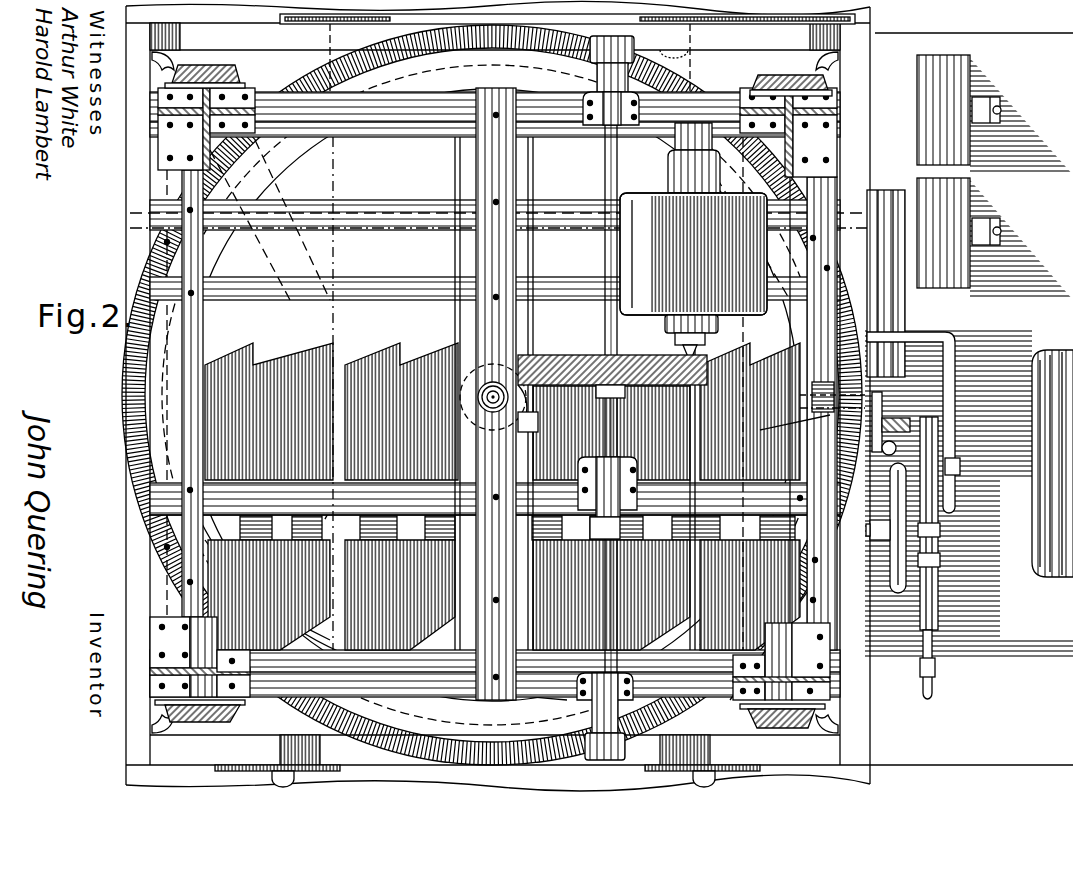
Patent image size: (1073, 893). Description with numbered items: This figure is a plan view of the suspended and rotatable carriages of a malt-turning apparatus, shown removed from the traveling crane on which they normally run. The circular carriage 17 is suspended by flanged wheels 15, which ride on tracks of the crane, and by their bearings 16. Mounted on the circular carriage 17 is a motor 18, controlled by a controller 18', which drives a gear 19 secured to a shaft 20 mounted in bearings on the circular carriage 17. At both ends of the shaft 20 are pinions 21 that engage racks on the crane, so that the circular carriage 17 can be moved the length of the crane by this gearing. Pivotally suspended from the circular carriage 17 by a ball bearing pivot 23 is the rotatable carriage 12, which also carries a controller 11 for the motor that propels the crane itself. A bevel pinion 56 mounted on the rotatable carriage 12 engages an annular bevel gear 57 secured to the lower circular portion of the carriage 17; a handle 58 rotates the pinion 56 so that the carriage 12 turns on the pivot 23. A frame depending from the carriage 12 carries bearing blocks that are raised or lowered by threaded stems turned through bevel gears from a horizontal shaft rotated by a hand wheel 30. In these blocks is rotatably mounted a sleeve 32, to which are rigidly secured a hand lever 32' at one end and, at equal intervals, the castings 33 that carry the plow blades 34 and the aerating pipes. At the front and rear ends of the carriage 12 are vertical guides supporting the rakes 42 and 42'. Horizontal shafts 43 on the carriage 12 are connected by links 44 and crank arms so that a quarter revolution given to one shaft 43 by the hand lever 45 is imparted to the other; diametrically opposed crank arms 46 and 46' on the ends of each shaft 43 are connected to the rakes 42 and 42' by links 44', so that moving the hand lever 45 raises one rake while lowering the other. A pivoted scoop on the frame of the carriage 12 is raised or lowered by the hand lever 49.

The controller 11 is at (955, 207).
The rotatable carriage 12 is at (878, 735).
The flanged wheels 15 is at (232, 75).
The bearings 16 is at (796, 650).
The circular carriage 17 is at (492, 395).
The motor 18 is at (693, 240).
The controller 18' is at (980, 110).
The gear 19 is at (556, 356).
The shaft 20 is at (604, 250).
The pinions 21 is at (600, 42).
The ball bearing pivot 23 is at (470, 375).
The hand wheel 30 is at (905, 585).
The sleeve 32 is at (495, 511).
The hand lever 32' is at (953, 558).
The castings 33 is at (250, 575).
The plow blades 34 is at (425, 368).
The rake 42 is at (518, 778).
The rake 42' is at (608, 20).
The horizontal shafts 43 is at (340, 178).
The links 44 is at (691, 42).
The links 44' is at (466, 773).
The hand lever 45 is at (509, 341).
The crank arm 46 is at (536, 449).
The crank arm 46' is at (480, 57).
The hand lever 49 is at (958, 352).
The bevel pinion 56 is at (811, 417).
The annular bevel gear 57 is at (258, 191).
The handle 58 is at (893, 444).